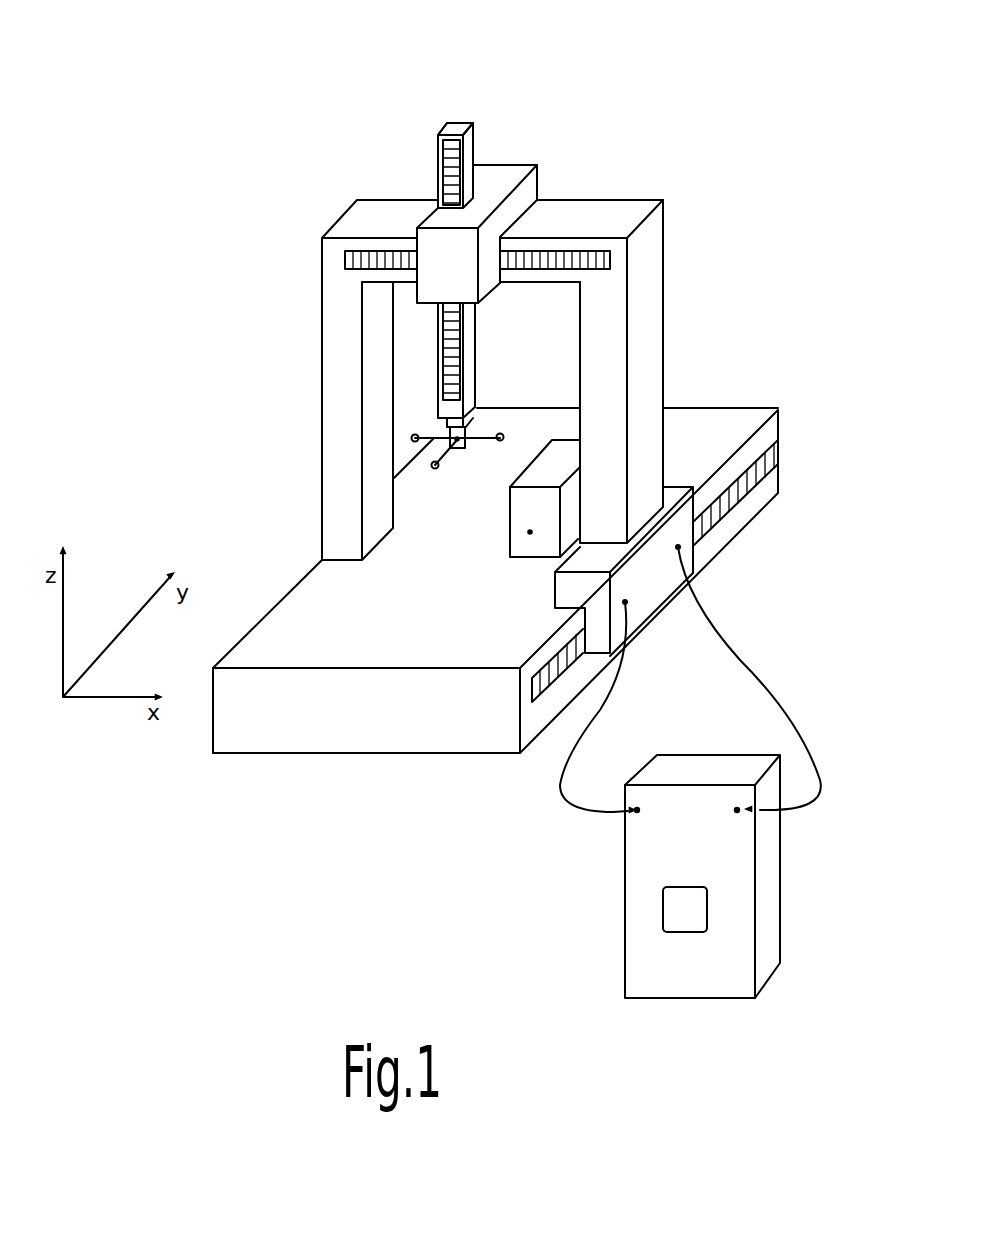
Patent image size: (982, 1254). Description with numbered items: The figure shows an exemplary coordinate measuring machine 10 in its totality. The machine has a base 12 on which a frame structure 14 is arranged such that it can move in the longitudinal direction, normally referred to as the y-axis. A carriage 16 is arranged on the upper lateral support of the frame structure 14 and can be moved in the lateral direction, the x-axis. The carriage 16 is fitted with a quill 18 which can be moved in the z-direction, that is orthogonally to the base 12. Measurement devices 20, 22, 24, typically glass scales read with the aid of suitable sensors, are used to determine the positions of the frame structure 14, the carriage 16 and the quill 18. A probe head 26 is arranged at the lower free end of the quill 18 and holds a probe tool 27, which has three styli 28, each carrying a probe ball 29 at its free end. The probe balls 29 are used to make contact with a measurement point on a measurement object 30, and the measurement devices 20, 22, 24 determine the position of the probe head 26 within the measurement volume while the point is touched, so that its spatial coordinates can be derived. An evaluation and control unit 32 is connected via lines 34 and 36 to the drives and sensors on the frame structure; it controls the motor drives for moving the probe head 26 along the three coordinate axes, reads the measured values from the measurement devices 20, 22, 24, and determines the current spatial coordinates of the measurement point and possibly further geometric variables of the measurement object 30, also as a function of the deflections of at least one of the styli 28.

The coordinate measuring machine 10 is at (457, 520).
The base 12 is at (313, 620).
The frame structure 14 is at (643, 327).
The carriage 16 is at (510, 170).
The quill 18 is at (460, 118).
The measurement device 20 is at (773, 445).
The measurement device 22 is at (570, 252).
The measurement device 24 is at (437, 153).
The probe head 26 is at (470, 418).
The probe tool 27 is at (445, 428).
The stylus 28 is at (428, 440).
The probe ball 29 is at (411, 438).
The measurement object 30 is at (530, 532).
The evaluation and control unit 32 is at (740, 970).
The line 34 is at (614, 692).
The line 36 is at (762, 682).